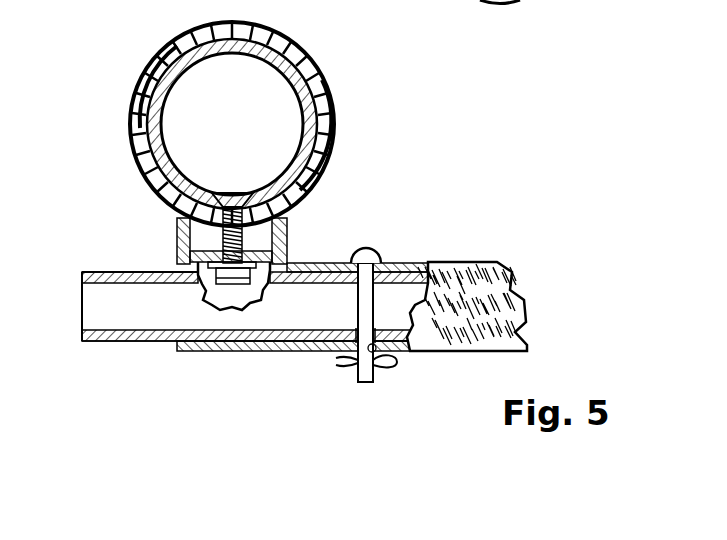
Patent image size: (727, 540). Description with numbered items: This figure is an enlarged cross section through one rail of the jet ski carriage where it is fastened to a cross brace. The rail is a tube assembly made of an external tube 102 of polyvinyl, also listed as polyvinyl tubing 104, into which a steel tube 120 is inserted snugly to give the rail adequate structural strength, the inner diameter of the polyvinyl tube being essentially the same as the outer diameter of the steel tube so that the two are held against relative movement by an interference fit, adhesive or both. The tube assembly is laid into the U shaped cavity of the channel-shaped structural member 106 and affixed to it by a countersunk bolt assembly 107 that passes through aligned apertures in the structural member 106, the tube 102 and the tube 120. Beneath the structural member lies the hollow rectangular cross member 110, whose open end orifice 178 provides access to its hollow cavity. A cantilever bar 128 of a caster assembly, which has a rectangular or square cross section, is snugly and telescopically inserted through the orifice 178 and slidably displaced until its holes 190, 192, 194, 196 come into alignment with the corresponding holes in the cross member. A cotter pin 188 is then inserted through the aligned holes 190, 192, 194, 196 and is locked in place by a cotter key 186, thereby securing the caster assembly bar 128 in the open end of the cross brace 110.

The external tube 102 is at (327, 88).
The steel tube 120 is at (335, 118).
The polyvinyl tubing 104 is at (325, 140).
The countersunk bolt assembly 107 is at (283, 218).
The channel-shaped structural member 106 is at (275, 240).
The cross member 110 is at (230, 353).
The cantilever bar 128 is at (113, 270).
The orifice 178 is at (173, 345).
The hole 194 is at (420, 280).
The hole 192 is at (381, 262).
The cotter pin 188 is at (363, 383).
The hole 196 is at (357, 330).
The hole 190 is at (390, 358).
The cotter key 186 is at (388, 368).